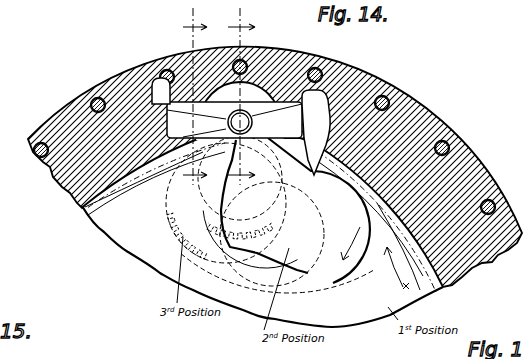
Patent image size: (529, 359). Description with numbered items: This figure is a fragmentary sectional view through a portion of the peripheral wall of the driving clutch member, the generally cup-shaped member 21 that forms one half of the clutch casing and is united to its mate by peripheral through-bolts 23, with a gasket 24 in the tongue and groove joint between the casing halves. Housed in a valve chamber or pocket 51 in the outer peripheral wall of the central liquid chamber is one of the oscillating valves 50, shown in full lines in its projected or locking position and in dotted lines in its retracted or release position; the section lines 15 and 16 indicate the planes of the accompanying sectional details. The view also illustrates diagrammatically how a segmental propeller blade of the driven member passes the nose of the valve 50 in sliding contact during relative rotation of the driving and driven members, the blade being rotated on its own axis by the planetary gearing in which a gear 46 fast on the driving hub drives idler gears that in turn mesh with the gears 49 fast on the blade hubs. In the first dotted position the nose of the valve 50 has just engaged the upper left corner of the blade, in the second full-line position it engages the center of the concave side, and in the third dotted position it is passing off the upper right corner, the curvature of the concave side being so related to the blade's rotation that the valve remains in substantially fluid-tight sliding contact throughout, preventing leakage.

The section line 15— 15 is at (195, 102).
The section line 16— 16 is at (241, 103).
The cup-shaped member 21 is at (422, 118).
The peripheral through-bolts 23 is at (262, 282).
The gasket 24 is at (31, 353).
The gear 46 is at (430, 288).
The gears 49 is at (315, 213).
The oscillating valves 50 is at (325, 107).
The valve chambers or pockets 51 is at (155, 77).